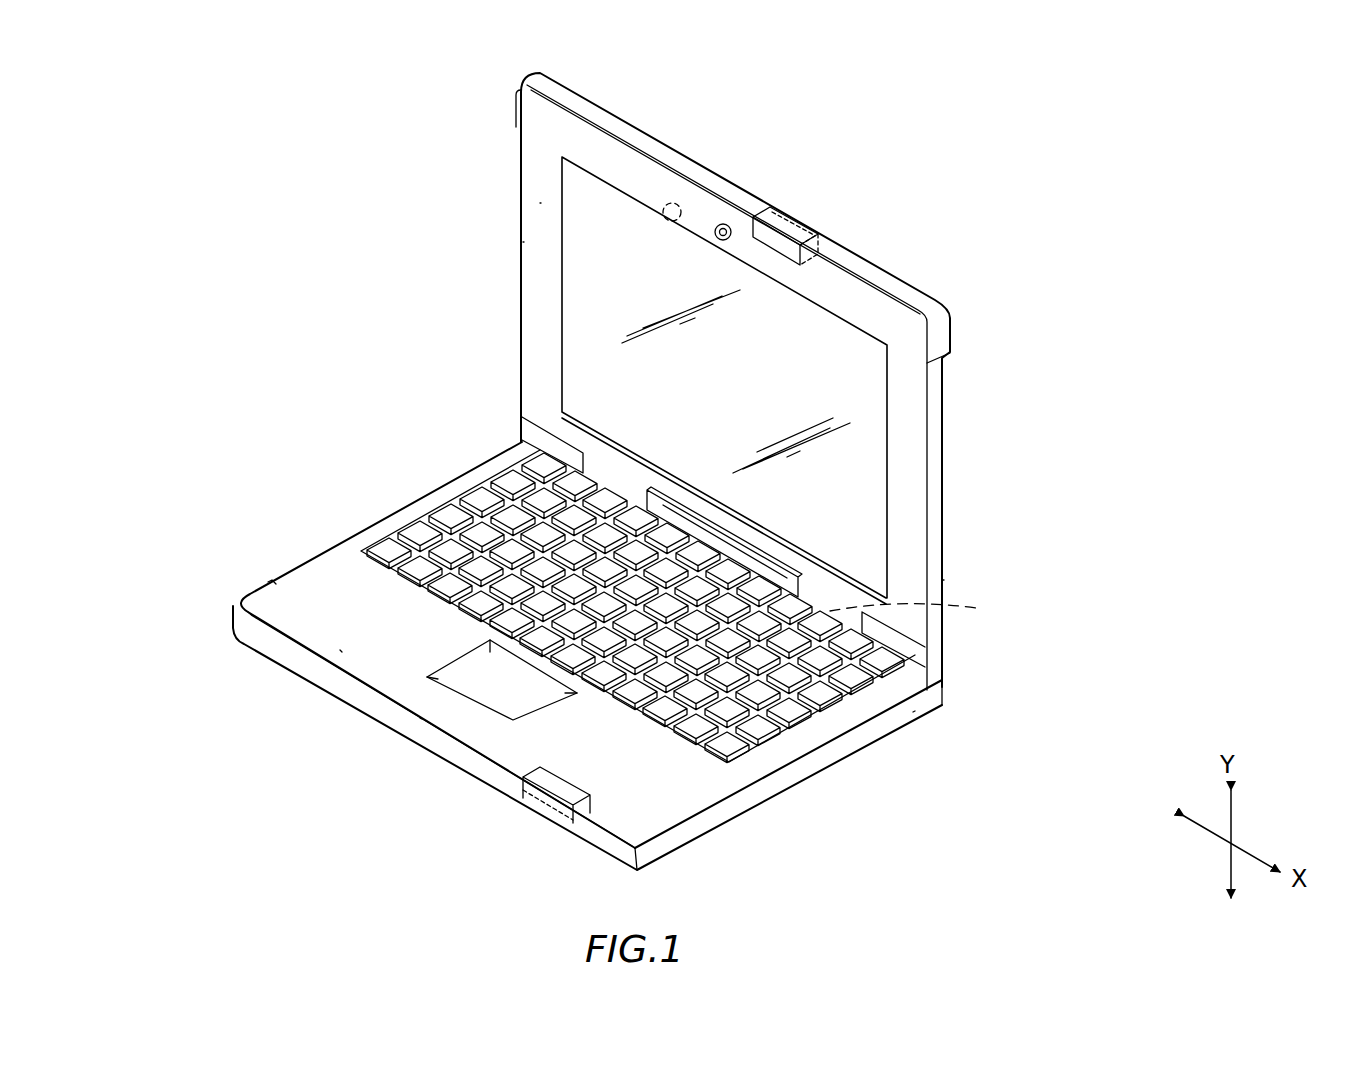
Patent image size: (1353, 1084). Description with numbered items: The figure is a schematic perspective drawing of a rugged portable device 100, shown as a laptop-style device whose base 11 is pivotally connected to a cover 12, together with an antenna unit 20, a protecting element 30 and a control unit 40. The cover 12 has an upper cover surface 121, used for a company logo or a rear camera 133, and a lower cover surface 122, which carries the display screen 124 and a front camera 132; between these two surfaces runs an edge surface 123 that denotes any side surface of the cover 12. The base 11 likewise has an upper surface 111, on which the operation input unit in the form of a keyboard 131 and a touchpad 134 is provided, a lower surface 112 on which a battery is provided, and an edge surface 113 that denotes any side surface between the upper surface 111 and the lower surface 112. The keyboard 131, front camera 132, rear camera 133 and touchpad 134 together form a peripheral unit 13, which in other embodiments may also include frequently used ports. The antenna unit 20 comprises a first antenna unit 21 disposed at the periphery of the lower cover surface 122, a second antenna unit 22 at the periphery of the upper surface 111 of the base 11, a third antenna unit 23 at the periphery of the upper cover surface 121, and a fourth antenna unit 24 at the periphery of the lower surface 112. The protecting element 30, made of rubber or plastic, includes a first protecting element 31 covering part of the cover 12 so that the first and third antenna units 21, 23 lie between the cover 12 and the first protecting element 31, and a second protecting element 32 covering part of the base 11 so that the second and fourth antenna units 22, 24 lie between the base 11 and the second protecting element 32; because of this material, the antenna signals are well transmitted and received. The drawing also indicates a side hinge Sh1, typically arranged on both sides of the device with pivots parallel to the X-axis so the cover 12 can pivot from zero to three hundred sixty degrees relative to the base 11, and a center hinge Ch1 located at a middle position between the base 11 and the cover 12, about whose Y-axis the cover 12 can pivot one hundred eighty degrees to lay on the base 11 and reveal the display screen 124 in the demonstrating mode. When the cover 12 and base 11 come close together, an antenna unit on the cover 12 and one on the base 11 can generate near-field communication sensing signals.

The rugged portable device 100 is at (155, 162).
The base 11 is at (283, 603).
The upper surface 111 is at (340, 650).
The lower surface 112 is at (913, 712).
The edge surface 113 is at (420, 718).
The cover 12 is at (537, 155).
The upper cover surface 121 is at (943, 580).
The lower cover surface 122 is at (540, 203).
The edge surface 123 is at (523, 242).
The display screen 124 is at (598, 217).
The peripheral unit 13 is at (418, 289).
The keyboard 131 is at (432, 536).
The front camera 132 is at (722, 236).
The rear camera 133 is at (665, 220).
The touchpad 134 is at (488, 648).
The antenna unit 20 is at (1061, 905).
The first antenna unit 21 is at (780, 262).
The second antenna unit 22 is at (573, 787).
The third antenna unit 23 is at (817, 243).
The fourth antenna unit 24 is at (643, 860).
The protecting element 30 is at (328, 195).
The first protecting element 31 is at (542, 82).
The second protecting element 32 is at (232, 614).
The control unit 40 is at (919, 610).
The side hinge Sh1 is at (538, 438).
The center hinge Ch1 is at (733, 547).